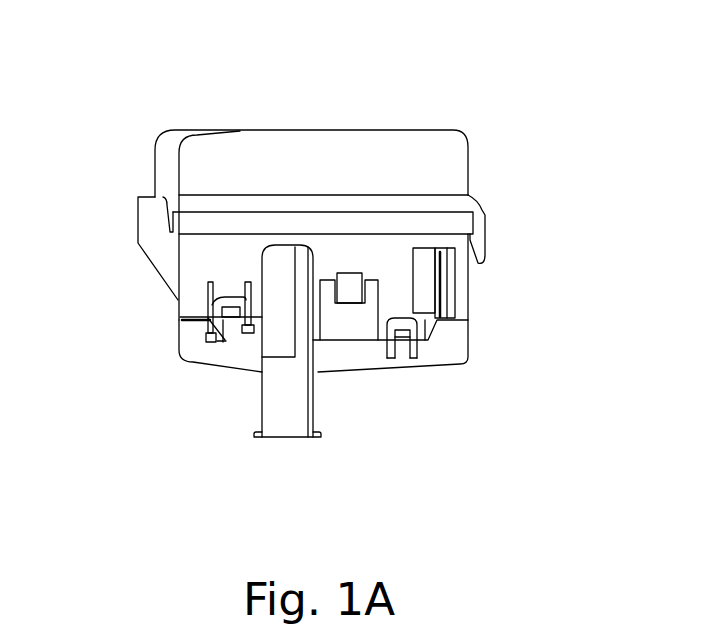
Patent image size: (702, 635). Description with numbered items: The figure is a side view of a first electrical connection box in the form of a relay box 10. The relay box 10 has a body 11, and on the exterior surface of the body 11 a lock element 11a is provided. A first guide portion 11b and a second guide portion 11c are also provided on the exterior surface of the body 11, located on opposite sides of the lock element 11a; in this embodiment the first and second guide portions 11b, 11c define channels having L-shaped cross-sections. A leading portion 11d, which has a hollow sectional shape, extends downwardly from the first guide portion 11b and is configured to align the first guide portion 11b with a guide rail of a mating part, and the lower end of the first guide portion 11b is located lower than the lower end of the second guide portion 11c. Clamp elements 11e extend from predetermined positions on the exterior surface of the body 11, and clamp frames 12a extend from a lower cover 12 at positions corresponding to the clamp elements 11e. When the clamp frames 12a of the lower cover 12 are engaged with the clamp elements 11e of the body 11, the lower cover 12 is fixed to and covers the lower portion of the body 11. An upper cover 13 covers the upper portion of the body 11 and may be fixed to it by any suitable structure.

The relay box 10 is at (143, 152).
The body 11 is at (462, 276).
The lock element 11a is at (345, 327).
The first guide portion 11b is at (277, 338).
The second guide portion 11c is at (420, 293).
The leading portion 11d is at (272, 407).
The clamp elements 11e is at (216, 333).
The lower cover 12 is at (455, 362).
The clamp frames 12a is at (210, 296).
The upper cover 13 is at (470, 157).